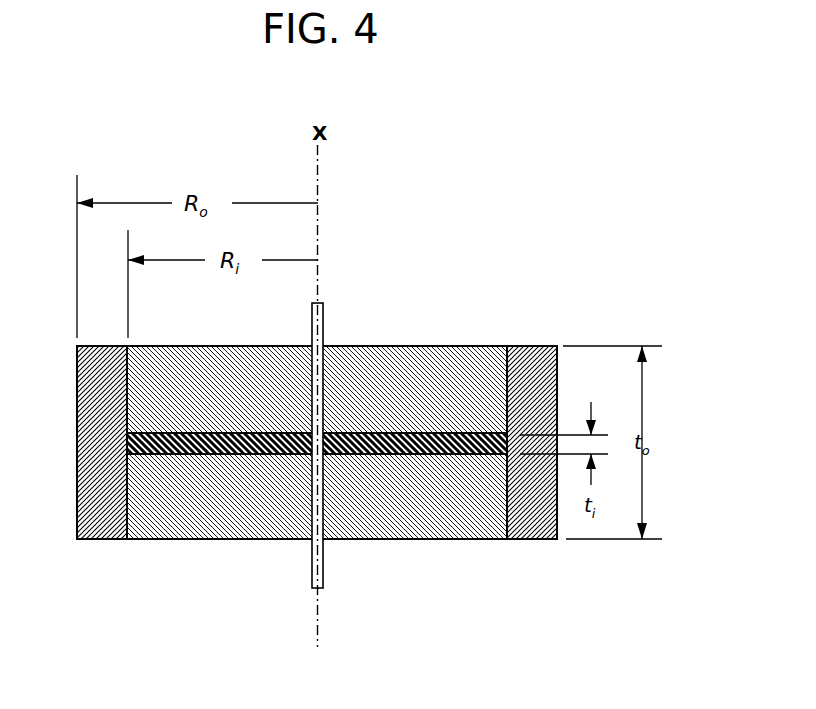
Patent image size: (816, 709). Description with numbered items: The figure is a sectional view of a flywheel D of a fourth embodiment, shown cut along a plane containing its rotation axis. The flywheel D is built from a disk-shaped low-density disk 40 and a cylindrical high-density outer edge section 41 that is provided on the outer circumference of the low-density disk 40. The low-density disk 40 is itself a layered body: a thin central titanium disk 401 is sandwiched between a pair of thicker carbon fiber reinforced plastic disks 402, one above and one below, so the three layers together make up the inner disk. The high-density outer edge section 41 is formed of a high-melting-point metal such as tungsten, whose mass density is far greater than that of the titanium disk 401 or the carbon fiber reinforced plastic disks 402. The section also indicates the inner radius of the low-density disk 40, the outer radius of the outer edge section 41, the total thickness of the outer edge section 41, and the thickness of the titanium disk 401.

The low-density disk 40 is at (404, 330).
The high-density outer edge section 41 is at (532, 347).
The titanium disk 401 is at (452, 455).
The carbon fiber reinforced plastic disks 402 is at (380, 540).
The flywheel D is at (502, 248).